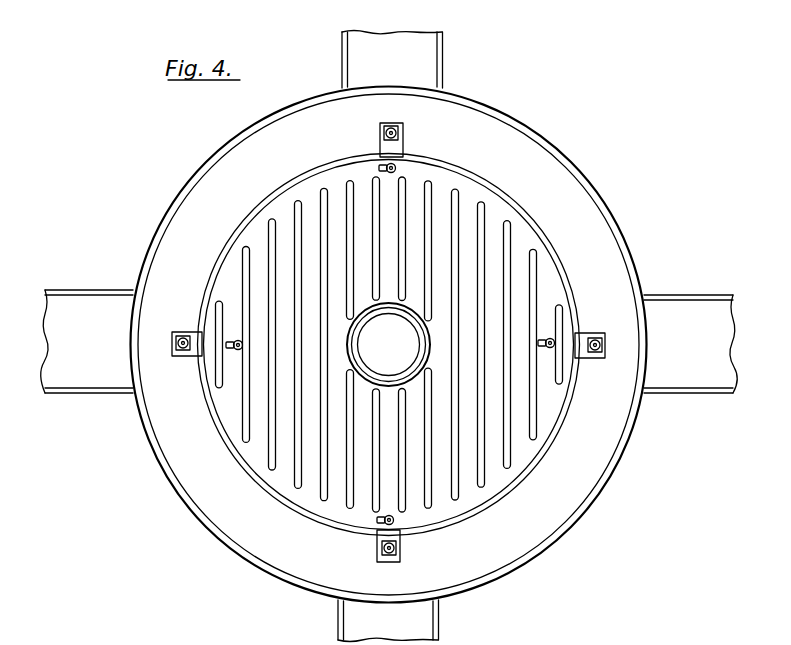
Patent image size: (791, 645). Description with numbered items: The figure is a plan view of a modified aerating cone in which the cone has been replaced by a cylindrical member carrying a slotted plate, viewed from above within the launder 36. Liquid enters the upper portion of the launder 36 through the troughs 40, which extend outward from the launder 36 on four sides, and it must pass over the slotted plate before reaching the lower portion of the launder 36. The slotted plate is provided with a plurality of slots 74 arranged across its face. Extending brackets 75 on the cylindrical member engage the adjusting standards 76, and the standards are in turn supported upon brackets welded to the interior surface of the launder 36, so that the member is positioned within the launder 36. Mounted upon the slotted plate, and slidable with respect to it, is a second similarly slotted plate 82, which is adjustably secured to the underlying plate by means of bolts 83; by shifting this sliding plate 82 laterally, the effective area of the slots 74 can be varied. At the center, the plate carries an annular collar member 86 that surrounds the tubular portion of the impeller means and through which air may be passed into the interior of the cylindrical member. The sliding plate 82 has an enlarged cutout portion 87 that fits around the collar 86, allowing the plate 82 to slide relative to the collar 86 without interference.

The launder 36 is at (243, 136).
The troughs 40 is at (430, 62).
The slots 74 is at (320, 472).
The brackets 75 is at (387, 124).
The adjusting standards 76 is at (404, 133).
The second slotted plate 82 is at (237, 280).
The bolts 83 is at (398, 165).
The annular collar member 86 is at (421, 332).
The enlarged cutout portion 87 is at (426, 345).